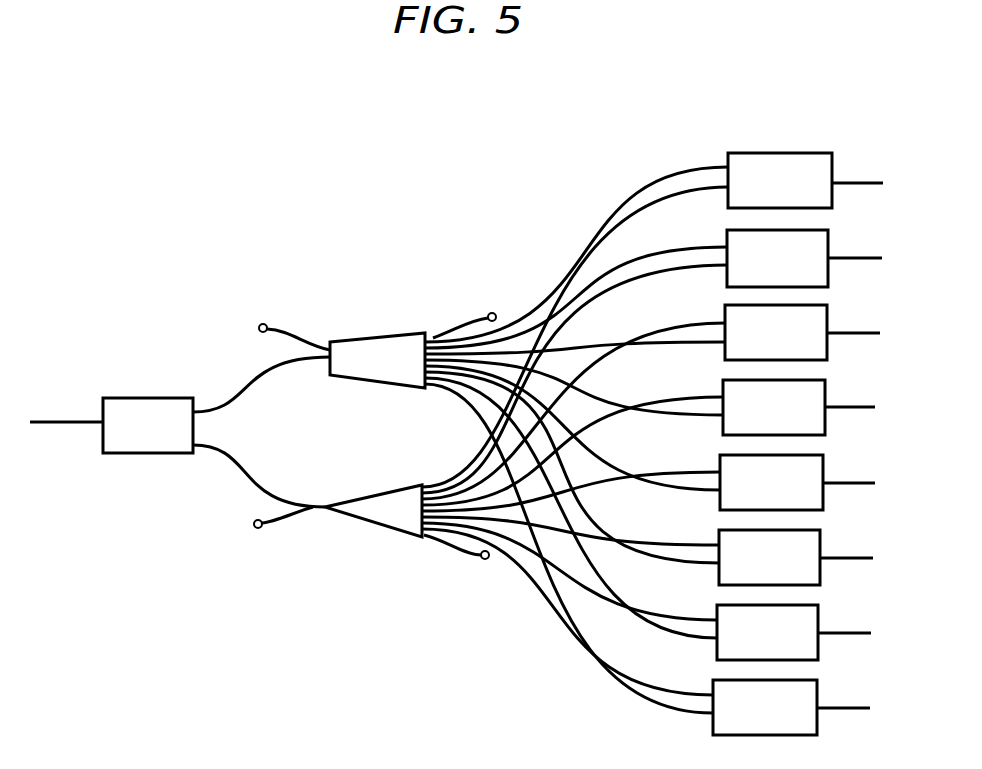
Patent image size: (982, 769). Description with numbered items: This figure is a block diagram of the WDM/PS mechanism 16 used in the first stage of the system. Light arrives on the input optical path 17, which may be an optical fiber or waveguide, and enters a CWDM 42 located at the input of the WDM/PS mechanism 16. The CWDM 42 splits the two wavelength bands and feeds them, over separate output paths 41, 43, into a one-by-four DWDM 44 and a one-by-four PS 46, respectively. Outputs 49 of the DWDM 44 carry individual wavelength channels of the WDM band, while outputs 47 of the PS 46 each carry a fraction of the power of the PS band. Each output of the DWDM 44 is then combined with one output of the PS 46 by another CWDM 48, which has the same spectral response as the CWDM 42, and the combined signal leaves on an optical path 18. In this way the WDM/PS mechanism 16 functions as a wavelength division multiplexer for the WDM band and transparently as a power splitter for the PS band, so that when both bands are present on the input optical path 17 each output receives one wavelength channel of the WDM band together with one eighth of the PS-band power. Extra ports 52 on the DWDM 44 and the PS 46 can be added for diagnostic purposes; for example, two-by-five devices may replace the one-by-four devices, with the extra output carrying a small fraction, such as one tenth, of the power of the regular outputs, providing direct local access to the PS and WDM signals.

The WDM/PS mechanism 16 is at (677, 82).
The input optical path 17 is at (68, 420).
The optical path 18 is at (857, 183).
The first coupler output fiber 41 is at (260, 383).
The CWDM 42 is at (145, 398).
The second coupler output fiber 43 is at (253, 473).
The DWDM 44 is at (376, 338).
The PS 46 is at (368, 520).
The power splitter output fibers 47 is at (453, 485).
The CWDM 48 is at (778, 153).
The DWDM output fibers 49 is at (463, 388).
The extra ports 52 is at (463, 323).